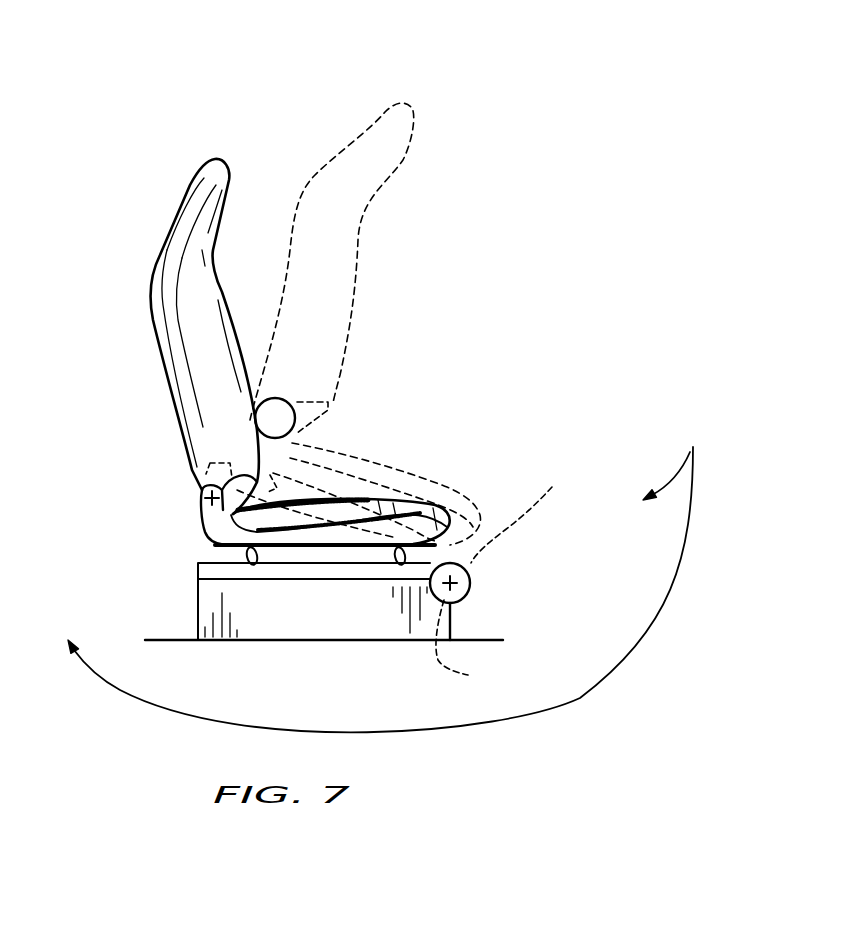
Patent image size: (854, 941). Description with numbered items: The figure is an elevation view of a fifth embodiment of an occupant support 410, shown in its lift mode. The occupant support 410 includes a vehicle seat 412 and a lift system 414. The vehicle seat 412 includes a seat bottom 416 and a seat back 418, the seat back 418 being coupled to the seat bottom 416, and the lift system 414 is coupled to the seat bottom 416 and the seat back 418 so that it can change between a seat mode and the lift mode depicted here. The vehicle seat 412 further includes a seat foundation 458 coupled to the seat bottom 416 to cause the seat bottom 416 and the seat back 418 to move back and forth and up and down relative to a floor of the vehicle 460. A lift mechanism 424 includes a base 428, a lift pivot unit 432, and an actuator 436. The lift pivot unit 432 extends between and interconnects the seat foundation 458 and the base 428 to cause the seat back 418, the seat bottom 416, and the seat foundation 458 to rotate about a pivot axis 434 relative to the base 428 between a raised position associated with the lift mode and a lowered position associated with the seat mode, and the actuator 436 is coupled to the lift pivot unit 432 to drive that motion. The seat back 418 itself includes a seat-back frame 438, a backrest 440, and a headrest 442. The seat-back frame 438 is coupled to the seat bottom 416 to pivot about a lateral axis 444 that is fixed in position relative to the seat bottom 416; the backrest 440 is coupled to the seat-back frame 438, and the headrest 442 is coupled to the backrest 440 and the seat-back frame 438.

The occupant support 410 is at (484, 274).
The vehicle seat 412 is at (367, 345).
The lift system 414 is at (389, 574).
The seat bottom 416 is at (349, 483).
The seat back 418 is at (152, 336).
The lift mechanism 424 is at (426, 553).
The base 428 is at (451, 623).
The lift pivot unit 432 is at (470, 574).
The pivot axis 434 is at (476, 644).
The actuator 436 is at (520, 512).
The seat-back frame 438 is at (173, 378).
The backrest 440 is at (242, 340).
The headrest 442 is at (226, 213).
The lateral axis 444 is at (200, 487).
The seat foundation 458 is at (234, 591).
The floor of the vehicle 460 is at (477, 640).